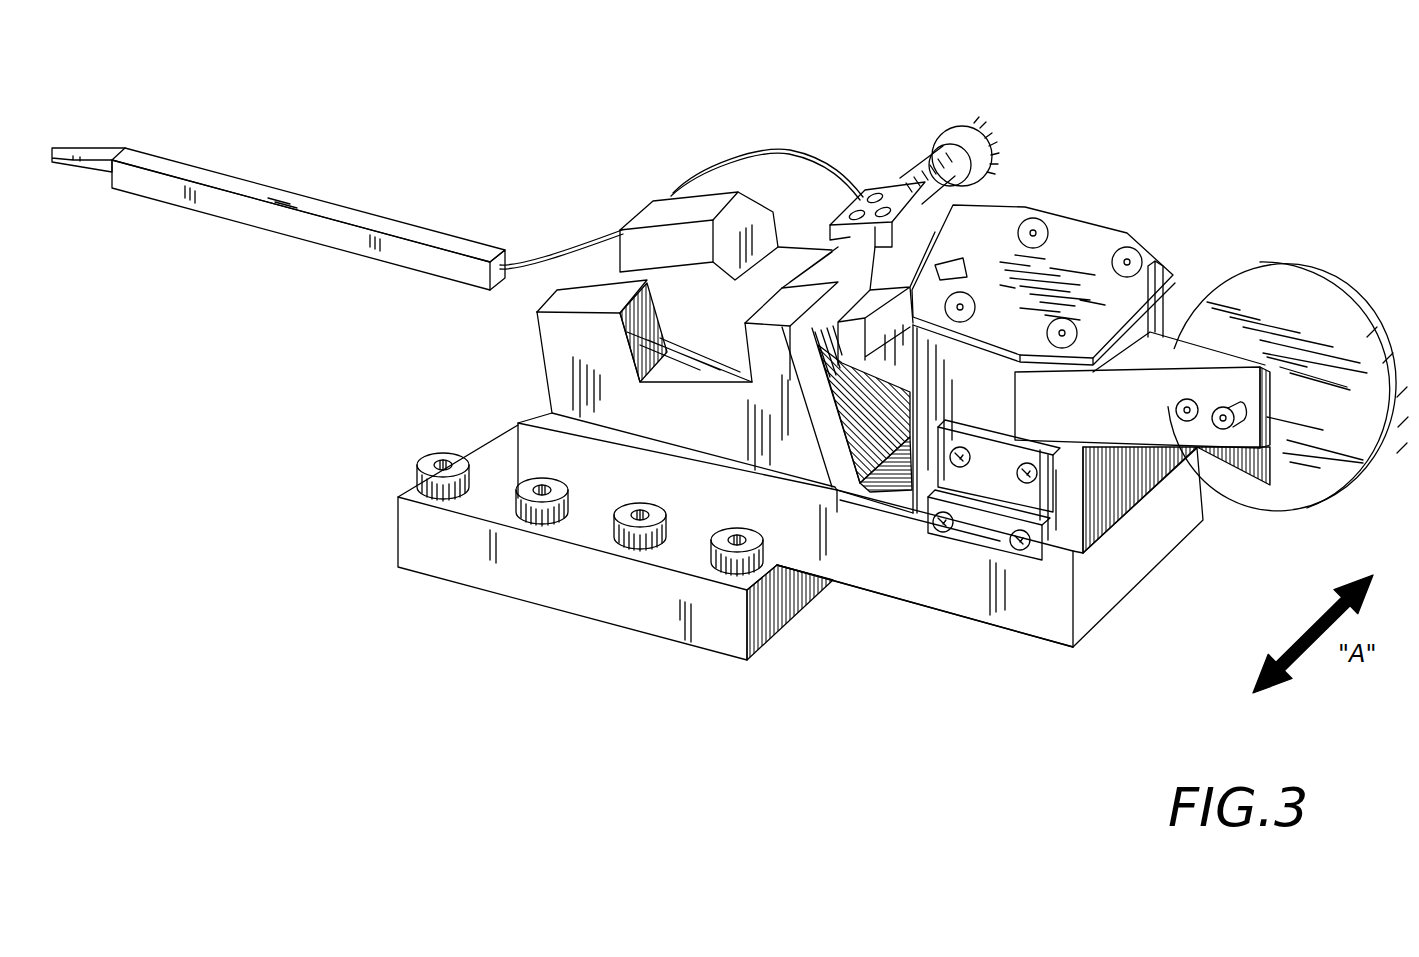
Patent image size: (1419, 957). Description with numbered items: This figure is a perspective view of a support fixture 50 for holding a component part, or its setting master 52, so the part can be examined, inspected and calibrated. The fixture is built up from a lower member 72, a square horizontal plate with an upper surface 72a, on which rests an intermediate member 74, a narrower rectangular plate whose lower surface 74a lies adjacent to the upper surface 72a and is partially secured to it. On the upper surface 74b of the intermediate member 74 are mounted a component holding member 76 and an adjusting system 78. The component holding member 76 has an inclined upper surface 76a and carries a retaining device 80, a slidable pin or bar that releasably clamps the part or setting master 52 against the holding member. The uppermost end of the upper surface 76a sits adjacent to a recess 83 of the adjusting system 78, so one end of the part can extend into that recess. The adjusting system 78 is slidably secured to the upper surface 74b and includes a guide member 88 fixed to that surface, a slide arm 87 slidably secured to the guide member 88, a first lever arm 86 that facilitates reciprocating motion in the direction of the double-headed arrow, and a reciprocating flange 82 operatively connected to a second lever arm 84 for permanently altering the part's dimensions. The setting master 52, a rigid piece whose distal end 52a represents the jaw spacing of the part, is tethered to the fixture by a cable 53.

The support fixture 50 is at (680, 158).
The setting master 52 is at (317, 203).
The distal end 52a is at (95, 148).
The cable 53 is at (540, 260).
The lower member 72 is at (497, 417).
The upper surface 72a is at (483, 497).
The intermediate member 74 is at (1057, 623).
The lower surface 74a is at (897, 597).
The upper surface 74b is at (853, 500).
The component holding member 76 is at (648, 243).
The upper surface 76a is at (722, 207).
The adjusting system 78 is at (1105, 217).
The retaining device 80 is at (967, 127).
The reciprocating flange 82 is at (985, 235).
The recess 83 is at (923, 260).
The second lever arm 84 is at (1157, 263).
The first lever arm 86 is at (1303, 273).
The slide arm 87 is at (1135, 421).
The guide member 88 is at (997, 487).